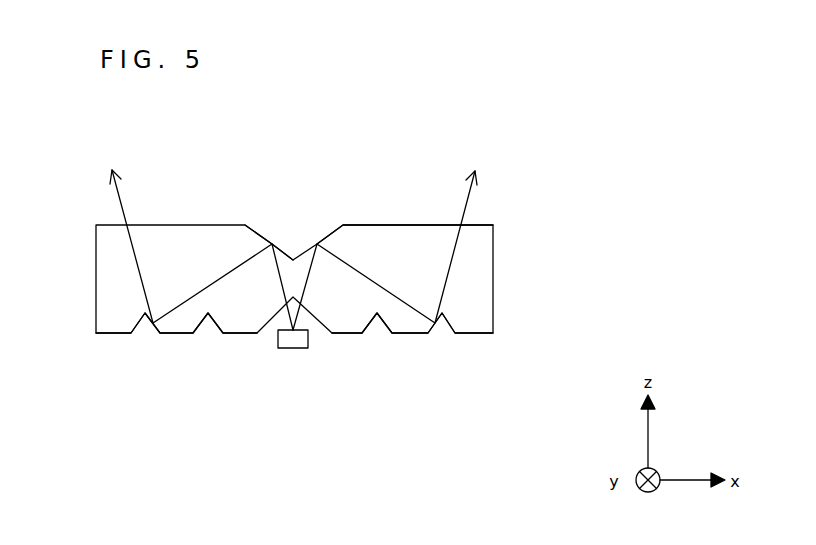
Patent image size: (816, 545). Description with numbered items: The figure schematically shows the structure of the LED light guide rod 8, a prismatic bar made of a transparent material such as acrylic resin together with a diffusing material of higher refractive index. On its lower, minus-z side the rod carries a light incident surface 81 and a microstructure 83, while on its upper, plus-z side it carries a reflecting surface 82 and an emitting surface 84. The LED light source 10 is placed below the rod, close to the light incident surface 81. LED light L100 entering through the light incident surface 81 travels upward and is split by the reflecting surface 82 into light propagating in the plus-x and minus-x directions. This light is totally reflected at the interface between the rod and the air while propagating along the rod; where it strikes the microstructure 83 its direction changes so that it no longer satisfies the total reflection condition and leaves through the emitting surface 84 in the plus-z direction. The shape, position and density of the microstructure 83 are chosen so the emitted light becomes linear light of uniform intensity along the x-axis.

The LED light guide rod 8 is at (499, 257).
The light incident surface 81 is at (268, 333).
The reflecting surface 82 is at (257, 240).
The microstructure 83 is at (444, 327).
The emitting surface 84 is at (412, 225).
The LED light source 10 is at (290, 342).
The LED light L100 is at (365, 278).